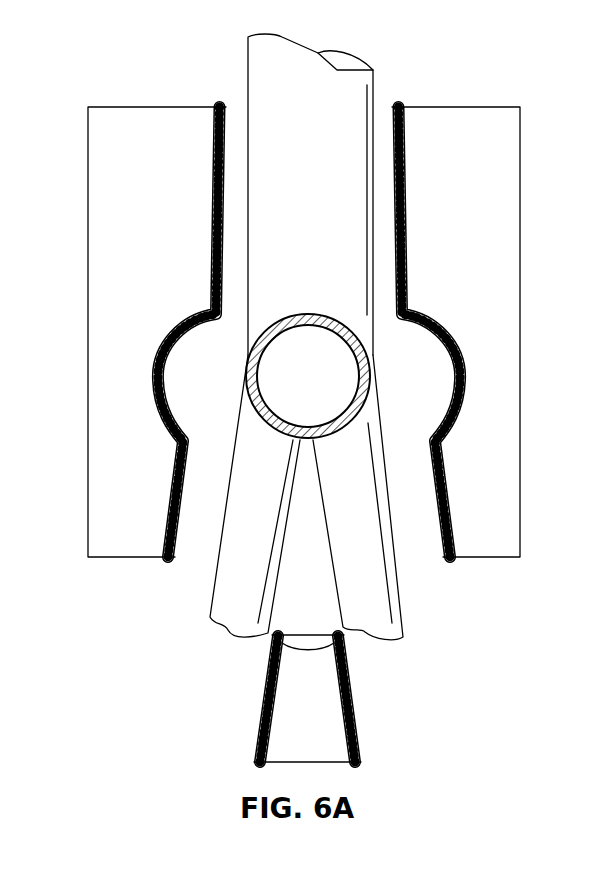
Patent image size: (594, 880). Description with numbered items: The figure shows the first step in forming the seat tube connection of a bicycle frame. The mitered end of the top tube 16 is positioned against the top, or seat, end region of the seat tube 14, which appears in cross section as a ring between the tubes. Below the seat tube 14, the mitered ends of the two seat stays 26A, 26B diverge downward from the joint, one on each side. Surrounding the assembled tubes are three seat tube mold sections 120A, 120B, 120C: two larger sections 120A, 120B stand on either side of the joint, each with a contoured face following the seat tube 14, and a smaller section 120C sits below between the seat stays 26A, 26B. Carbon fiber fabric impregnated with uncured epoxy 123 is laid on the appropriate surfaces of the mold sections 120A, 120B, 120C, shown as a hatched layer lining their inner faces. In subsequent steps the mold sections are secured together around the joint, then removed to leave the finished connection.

The seat tube 14 is at (265, 348).
The top tube 16 is at (273, 77).
The seat stay 26A is at (260, 513).
The seat stay 26B is at (358, 507).
The seat tube mold section 120A is at (157, 332).
The seat tube mold section 120B is at (456, 332).
The seat tube mold section 120C is at (313, 730).
The carbon fiber fabric impregnated with uncured epoxy 123 is at (225, 122).